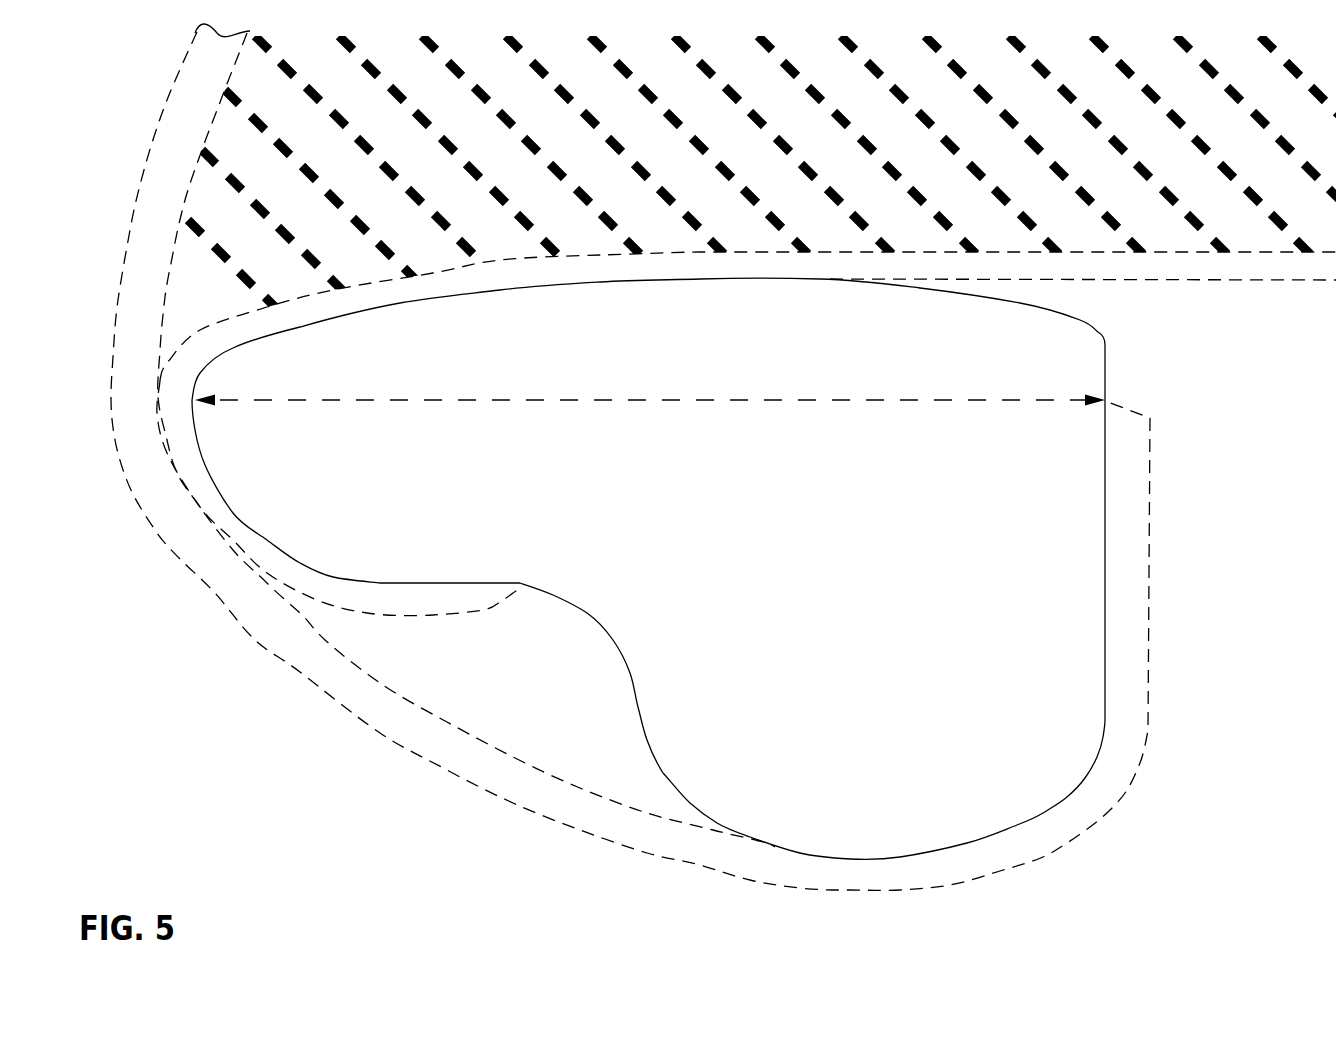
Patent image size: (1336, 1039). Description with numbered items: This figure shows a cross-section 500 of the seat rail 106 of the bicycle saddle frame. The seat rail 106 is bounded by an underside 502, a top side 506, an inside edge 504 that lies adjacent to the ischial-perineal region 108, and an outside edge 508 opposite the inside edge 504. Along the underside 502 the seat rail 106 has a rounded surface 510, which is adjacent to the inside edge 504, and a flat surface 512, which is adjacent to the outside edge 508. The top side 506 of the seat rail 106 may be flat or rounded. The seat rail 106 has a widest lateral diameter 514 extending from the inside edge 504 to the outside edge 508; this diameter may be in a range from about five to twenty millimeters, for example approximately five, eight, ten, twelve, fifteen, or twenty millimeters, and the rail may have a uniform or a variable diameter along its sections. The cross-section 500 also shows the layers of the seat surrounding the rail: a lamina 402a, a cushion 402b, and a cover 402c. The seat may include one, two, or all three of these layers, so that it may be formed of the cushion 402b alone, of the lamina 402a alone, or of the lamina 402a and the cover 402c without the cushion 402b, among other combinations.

The cross-section 500 is at (730, 568).
The underside 502 is at (682, 563).
The inside edge 504 is at (1088, 702).
The top side 506 is at (715, 310).
The outside edge 508 is at (271, 473).
The rounded surface 510 is at (720, 824).
The flat surface 512 is at (428, 583).
The widest lateral diameter 514 is at (664, 404).
The seat rail 106 is at (897, 609).
The ischial-perineal region 108 is at (1286, 549).
The lamina 402a is at (662, 252).
The cushion 402b is at (762, 173).
The cover 402c is at (150, 162).